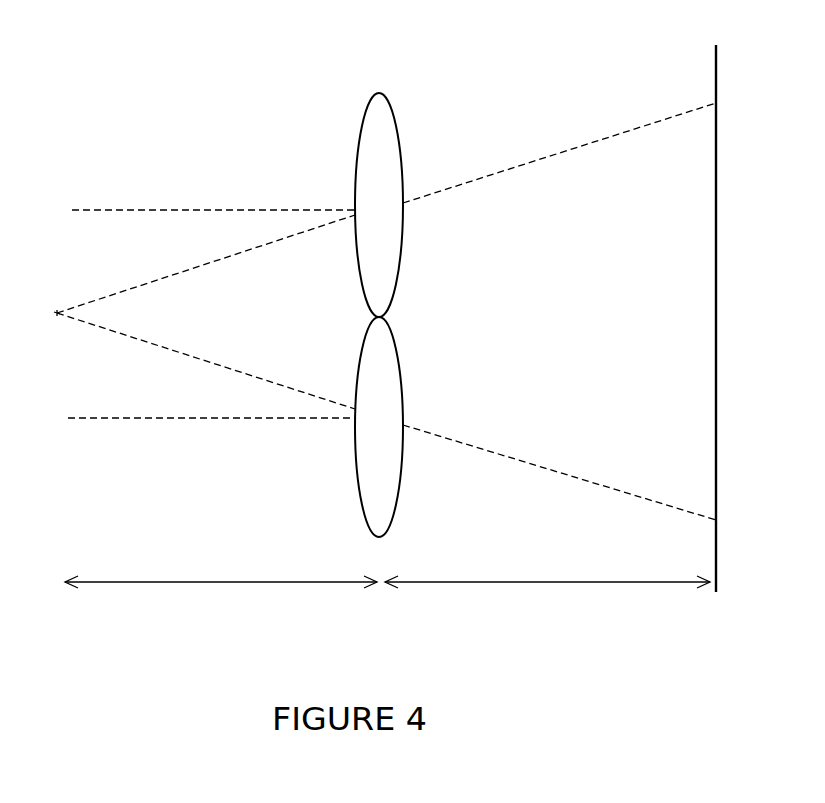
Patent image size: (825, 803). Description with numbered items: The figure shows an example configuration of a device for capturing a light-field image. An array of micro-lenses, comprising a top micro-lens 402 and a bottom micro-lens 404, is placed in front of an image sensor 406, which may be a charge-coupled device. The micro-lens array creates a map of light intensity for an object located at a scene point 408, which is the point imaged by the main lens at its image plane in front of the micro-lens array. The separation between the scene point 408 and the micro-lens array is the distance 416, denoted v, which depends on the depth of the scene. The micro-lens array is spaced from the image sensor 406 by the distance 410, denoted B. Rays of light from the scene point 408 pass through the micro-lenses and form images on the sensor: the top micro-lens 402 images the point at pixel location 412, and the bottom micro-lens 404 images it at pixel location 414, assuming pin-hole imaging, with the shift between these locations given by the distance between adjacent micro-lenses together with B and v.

The micro-lens 402 is at (402, 158).
The micro-lens 404 is at (400, 350).
The image sensor 406 is at (716, 266).
The point 408 is at (57, 313).
The distance 410 is at (527, 582).
The image 412 is at (716, 103).
The image 414 is at (716, 520).
The distance 416 is at (218, 582).